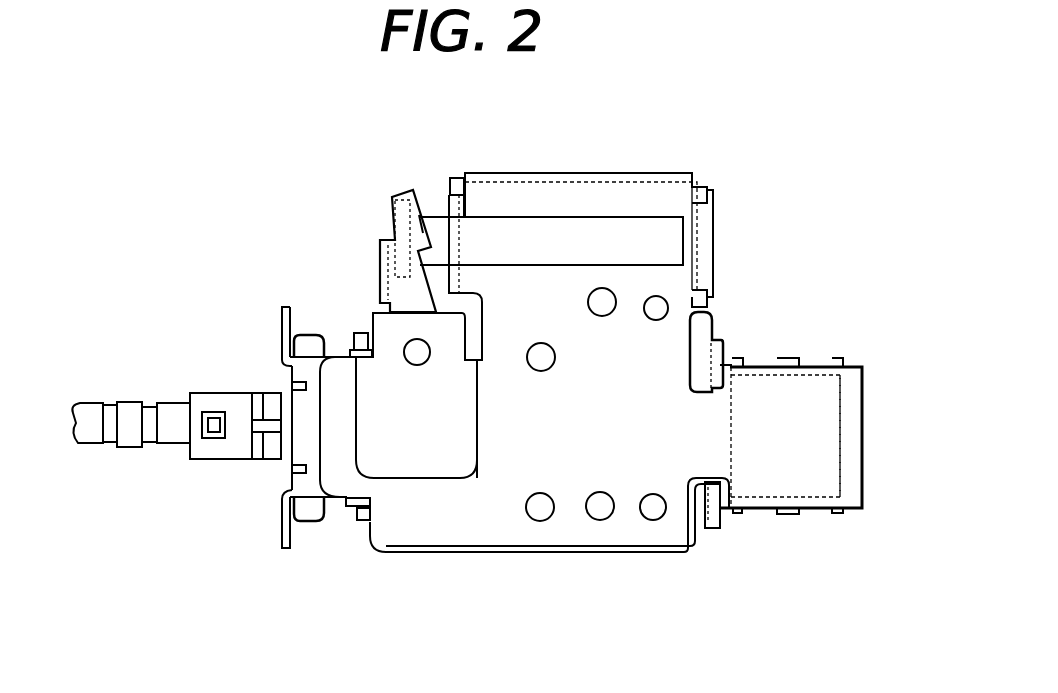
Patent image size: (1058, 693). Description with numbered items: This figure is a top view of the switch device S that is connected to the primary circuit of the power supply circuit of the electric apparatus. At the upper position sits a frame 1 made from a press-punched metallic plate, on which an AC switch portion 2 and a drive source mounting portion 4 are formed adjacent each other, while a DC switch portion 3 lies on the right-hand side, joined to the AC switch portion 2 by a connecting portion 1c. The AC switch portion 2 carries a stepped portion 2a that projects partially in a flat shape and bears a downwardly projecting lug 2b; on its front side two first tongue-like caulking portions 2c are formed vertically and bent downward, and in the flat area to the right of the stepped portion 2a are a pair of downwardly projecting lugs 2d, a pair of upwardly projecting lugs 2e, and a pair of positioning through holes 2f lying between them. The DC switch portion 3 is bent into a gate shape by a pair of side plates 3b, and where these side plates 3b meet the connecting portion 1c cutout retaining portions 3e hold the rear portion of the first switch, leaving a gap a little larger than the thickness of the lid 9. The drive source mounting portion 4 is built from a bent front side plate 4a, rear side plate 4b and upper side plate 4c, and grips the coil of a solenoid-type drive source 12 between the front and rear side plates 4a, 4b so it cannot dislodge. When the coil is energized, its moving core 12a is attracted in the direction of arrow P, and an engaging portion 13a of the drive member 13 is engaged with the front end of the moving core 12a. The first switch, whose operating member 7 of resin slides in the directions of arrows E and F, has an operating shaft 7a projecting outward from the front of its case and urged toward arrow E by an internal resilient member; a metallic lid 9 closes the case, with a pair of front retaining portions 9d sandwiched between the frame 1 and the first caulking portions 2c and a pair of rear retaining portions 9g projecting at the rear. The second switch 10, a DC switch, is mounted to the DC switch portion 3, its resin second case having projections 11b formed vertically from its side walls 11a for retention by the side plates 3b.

The frame 1 is at (436, 518).
The connecting portion 1c is at (284, 382).
The AC switch portion 2 is at (486, 484).
The stepped portion 2a is at (405, 425).
The lug 2b is at (408, 346).
The first tongue-like caulking portions 2c is at (352, 349).
The downwardly projecting lugs 2d is at (540, 360).
The upwardly projecting lugs 2e is at (655, 312).
The positioning through holes 2f is at (600, 306).
The DC switch portion 3 is at (827, 411).
The side plates 3b is at (821, 366).
The retaining portions 3e is at (731, 358).
The drive source mounting portion 4 is at (642, 197).
The front side plate 4a is at (453, 188).
The rear side plate 4b is at (714, 235).
The upper side plate 4c is at (583, 173).
The operating member 7 is at (195, 386).
The operating shaft 7a is at (130, 410).
The lid 9 is at (705, 330).
The front retaining portions 9d is at (294, 354).
The rear retaining portions 9g is at (716, 342).
The second switch 10 is at (850, 448).
The side walls 11a is at (824, 363).
The projections 11b is at (788, 358).
The drive source 12 is at (518, 187).
The moving core 12a is at (426, 203).
The drive member 13 is at (373, 257).
The engaging portion 13a is at (376, 200).
The switch device S is at (715, 153).
The arrow P direction P is at (372, 223).
The arrow E direction E is at (128, 480).
The arrow F direction F is at (137, 480).